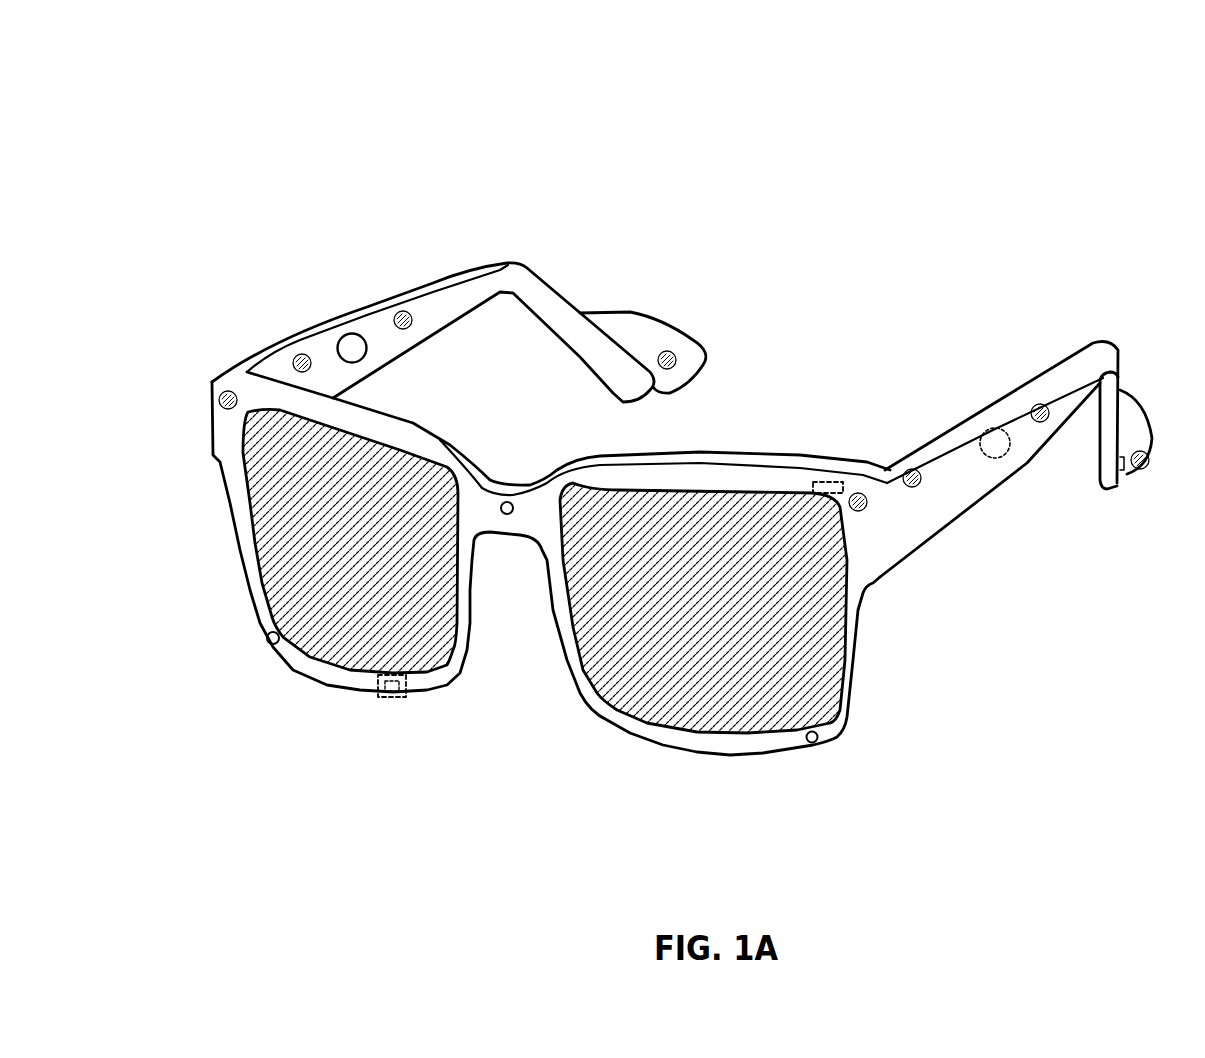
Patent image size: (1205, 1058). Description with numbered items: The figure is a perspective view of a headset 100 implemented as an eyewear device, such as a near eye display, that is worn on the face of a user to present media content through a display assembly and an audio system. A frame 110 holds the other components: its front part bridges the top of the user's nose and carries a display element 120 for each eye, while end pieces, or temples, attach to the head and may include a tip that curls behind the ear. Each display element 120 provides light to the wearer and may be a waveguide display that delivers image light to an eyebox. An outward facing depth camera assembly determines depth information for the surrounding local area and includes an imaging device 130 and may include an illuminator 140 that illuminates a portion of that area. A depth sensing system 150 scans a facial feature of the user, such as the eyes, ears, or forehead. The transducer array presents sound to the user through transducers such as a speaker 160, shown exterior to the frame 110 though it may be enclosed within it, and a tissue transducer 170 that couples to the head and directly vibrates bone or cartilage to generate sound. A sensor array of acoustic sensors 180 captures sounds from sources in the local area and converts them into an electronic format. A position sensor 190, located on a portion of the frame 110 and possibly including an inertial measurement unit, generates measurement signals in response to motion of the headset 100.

The headset 100 is at (151, 94).
The frame 110 is at (1103, 342).
The display element 120 is at (297, 542).
The imaging device 130 is at (268, 644).
The illuminator 140 is at (505, 515).
The depth sensing system 150 is at (826, 488).
The speaker 160 is at (356, 333).
The tissue transducer 170 is at (627, 318).
The acoustic sensor 180 is at (228, 391).
The position sensor 190 is at (389, 699).